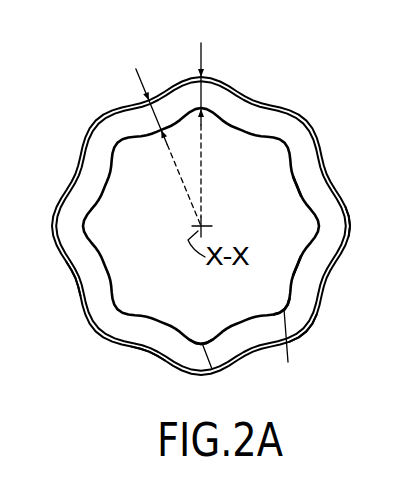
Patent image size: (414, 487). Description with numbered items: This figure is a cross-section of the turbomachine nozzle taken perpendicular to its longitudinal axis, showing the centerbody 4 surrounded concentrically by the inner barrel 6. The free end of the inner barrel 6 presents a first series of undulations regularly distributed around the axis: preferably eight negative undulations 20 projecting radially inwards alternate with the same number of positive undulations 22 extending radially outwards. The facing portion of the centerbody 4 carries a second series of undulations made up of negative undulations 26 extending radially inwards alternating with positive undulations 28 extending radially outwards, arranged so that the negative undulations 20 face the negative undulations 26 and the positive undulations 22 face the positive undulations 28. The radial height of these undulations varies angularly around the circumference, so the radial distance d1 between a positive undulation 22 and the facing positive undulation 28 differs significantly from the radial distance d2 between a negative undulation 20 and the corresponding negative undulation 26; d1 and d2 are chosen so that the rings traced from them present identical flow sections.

The centerbody 4 is at (102, 183).
The inner barrel 6 is at (88, 120).
The negative undulations 20 is at (148, 351).
The positive undulations 22 is at (352, 226).
The negative undulations 26 is at (303, 265).
The positive undulations 28 is at (212, 369).
The radial distance d1 is at (202, 99).
The radial distance d2 is at (158, 118).